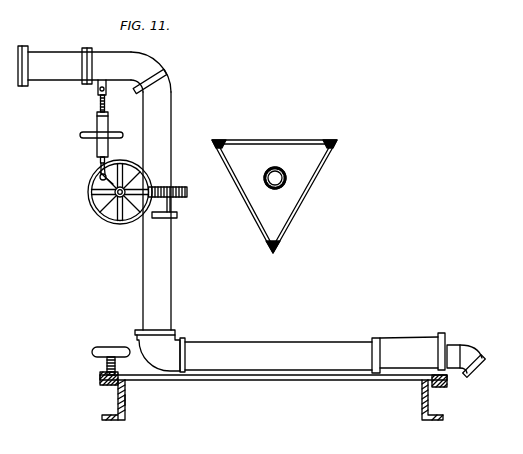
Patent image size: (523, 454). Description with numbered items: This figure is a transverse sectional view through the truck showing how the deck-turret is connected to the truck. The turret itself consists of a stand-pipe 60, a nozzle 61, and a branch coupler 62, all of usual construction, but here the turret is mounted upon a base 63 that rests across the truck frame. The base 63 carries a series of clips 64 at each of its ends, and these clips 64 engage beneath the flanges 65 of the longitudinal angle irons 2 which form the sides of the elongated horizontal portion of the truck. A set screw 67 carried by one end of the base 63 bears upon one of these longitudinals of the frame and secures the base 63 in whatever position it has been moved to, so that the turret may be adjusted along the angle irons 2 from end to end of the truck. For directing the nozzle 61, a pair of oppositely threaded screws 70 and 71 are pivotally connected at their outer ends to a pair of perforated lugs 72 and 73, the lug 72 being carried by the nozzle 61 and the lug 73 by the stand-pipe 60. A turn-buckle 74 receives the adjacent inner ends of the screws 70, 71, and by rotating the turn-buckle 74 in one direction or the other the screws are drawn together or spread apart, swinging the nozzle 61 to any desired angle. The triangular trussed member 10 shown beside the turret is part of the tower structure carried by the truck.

The longitudinal angle irons 2 is at (125, 398).
The triangular frame 10 is at (216, 140).
The stand-pipe 60 is at (162, 272).
The nozzle 61 is at (55, 55).
The branch coupler 62 is at (412, 345).
The base 63 is at (303, 378).
The clips 64 is at (105, 385).
The flanges 65 is at (100, 380).
The set screw 67 is at (107, 362).
The screw 70 is at (100, 103).
The screw 71 is at (99, 162).
The perforated lug 72 is at (103, 84).
The perforated lug 73 is at (110, 178).
The turn-buckle 74 is at (97, 142).